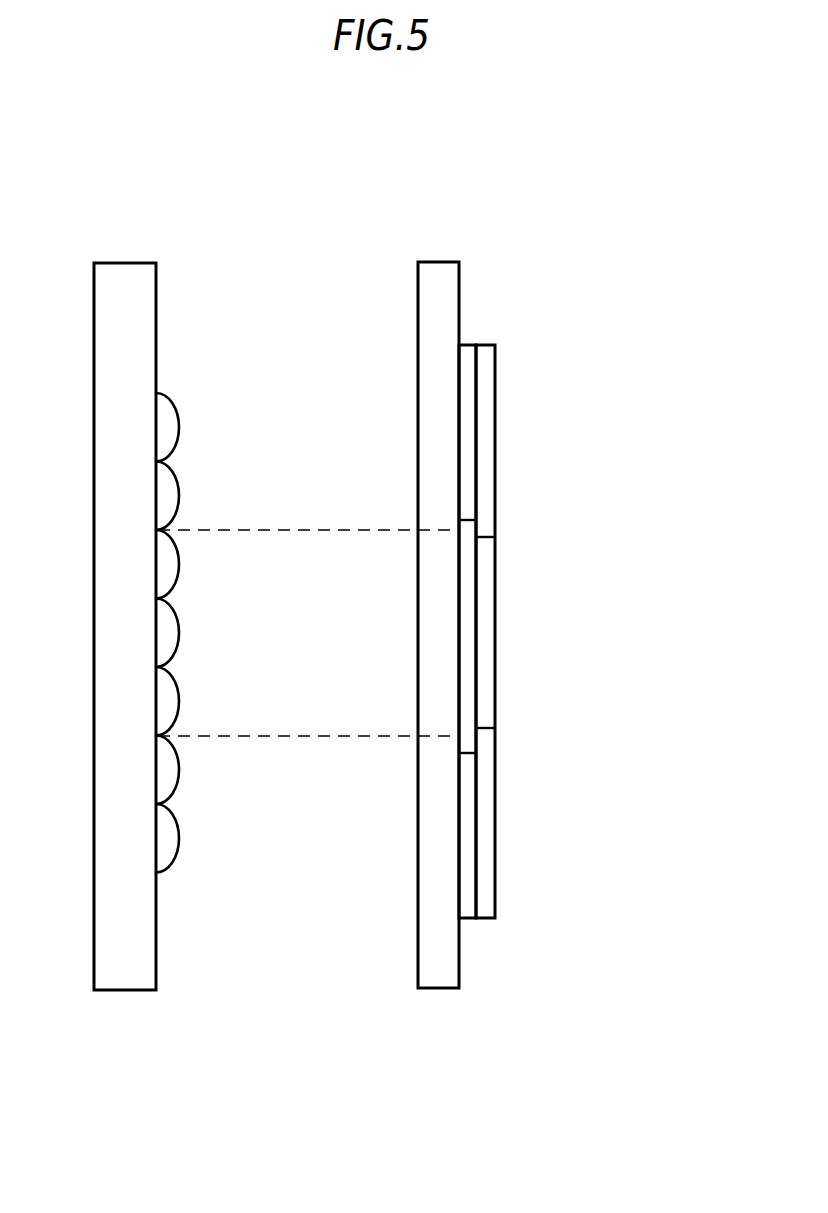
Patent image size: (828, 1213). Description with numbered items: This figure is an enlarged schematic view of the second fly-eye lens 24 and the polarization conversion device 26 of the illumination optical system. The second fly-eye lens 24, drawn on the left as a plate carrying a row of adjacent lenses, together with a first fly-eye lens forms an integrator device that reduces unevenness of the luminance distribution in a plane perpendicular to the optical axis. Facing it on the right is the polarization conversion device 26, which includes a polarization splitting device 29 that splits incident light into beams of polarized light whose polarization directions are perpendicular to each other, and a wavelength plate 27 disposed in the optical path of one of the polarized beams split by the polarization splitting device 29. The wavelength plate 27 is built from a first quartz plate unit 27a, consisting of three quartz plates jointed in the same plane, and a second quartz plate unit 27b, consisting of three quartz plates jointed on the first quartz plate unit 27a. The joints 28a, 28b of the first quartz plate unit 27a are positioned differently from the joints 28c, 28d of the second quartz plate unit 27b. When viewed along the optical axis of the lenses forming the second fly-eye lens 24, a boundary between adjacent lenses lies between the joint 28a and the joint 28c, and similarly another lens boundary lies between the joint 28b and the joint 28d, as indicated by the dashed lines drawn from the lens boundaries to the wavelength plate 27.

The second fly-eye lens 24 is at (134, 232).
The polarization conversion device 26 is at (556, 602).
The wavelength plate 27 is at (577, 539).
The first quartz plate unit 27a is at (480, 316).
The second quartz plate unit 27b is at (508, 320).
The joint 28a is at (470, 514).
The joint 28b is at (470, 757).
The joint 28c is at (490, 532).
The joint 28d is at (490, 723).
The polarization splitting device 29 is at (436, 262).